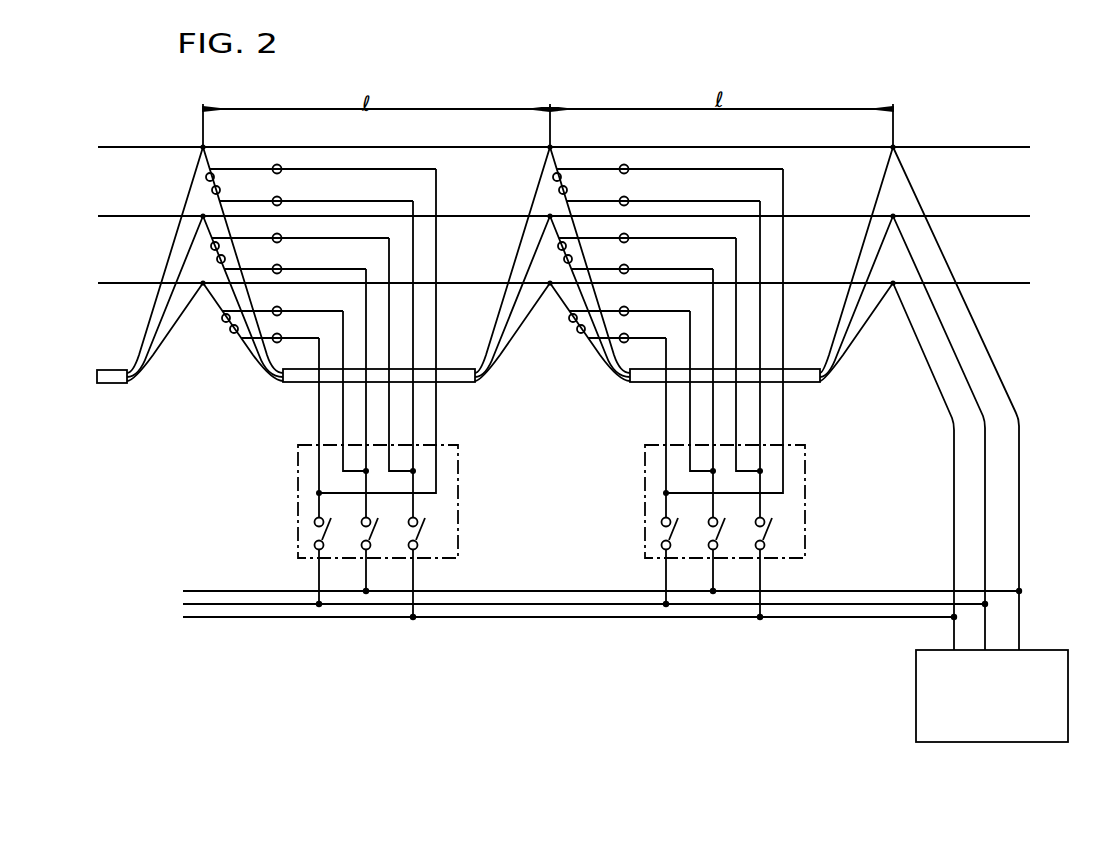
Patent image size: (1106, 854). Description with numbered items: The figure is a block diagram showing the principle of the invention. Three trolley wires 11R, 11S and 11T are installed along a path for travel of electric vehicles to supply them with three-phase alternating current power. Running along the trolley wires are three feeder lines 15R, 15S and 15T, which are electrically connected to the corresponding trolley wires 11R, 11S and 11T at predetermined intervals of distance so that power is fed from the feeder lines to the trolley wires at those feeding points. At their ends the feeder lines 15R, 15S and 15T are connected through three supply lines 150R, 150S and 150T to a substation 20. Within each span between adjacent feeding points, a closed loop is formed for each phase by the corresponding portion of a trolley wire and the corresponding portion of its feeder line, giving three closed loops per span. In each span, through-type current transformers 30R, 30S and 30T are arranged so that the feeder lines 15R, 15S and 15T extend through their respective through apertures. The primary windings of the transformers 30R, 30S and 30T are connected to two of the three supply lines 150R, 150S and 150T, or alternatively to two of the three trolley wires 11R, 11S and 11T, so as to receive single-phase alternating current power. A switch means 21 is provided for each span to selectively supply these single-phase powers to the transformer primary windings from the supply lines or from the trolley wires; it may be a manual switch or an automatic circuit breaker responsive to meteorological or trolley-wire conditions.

The trolley wire 11R is at (793, 148).
The trolley wire 11S is at (805, 216).
The trolley wire 11T is at (793, 283).
The feeder line 15R is at (542, 168).
The feeder line 15S is at (535, 250).
The feeder line 15T is at (503, 357).
The through-type current transformer 30R is at (220, 185).
The through-type current transformer 30S is at (226, 254).
The through-type current transformer 30T is at (228, 336).
The switch means 21 is at (460, 493).
The supply line 150R is at (1003, 382).
The supply line 150S is at (982, 408).
The supply line 150T is at (954, 472).
The substation 20 is at (916, 704).